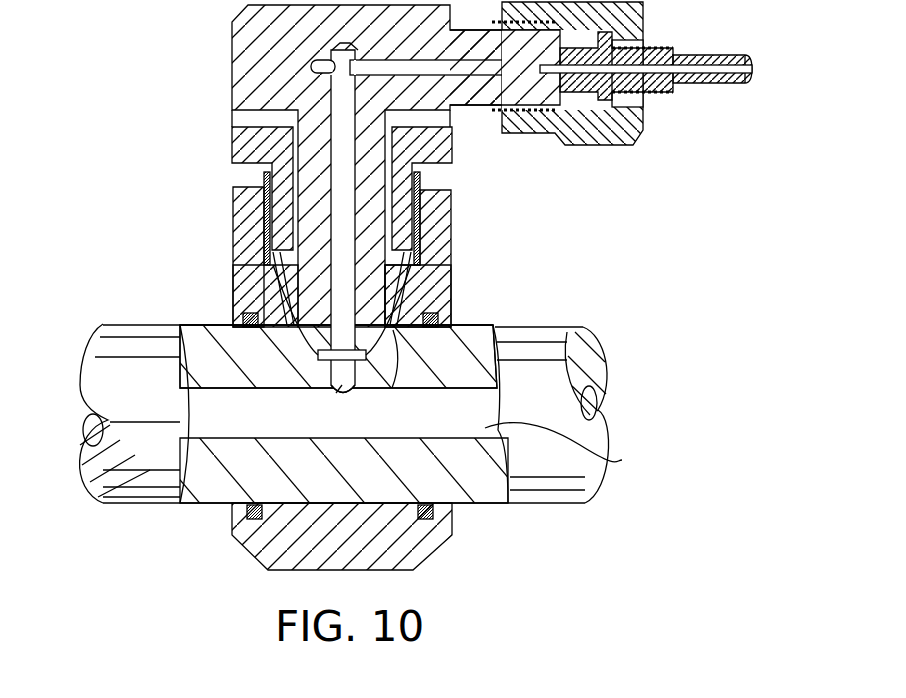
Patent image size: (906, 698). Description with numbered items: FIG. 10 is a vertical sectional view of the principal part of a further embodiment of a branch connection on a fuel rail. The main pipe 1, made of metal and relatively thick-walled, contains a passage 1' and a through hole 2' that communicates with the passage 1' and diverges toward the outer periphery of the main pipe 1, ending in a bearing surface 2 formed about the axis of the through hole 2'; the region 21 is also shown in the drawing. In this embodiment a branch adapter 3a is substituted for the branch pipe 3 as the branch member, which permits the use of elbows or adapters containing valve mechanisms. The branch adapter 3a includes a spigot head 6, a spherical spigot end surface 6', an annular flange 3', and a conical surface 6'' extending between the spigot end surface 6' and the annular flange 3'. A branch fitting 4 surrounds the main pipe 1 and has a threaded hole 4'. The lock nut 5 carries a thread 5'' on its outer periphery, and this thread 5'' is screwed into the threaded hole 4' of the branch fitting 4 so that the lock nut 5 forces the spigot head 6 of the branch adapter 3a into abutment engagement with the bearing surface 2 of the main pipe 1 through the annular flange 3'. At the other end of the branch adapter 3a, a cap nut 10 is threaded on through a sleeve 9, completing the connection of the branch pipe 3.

The main pipe 1 is at (274, 404).
The passage 1' is at (482, 414).
The bearing surface 2 is at (342, 351).
The through hole 2' is at (322, 411).
The flow passage 21 is at (440, 360).
The branch pipe 3 is at (712, 41).
The annular flange 3' is at (227, 257).
The branch adapter 3a is at (407, 207).
The branch fitting 4 is at (214, 296).
The threaded hole 4' is at (457, 252).
The lock nut 5 is at (435, 180).
The thread 5'' is at (225, 180).
The spigot head 6 is at (444, 296).
The spherical spigot end surface 6' is at (443, 289).
The conical surface 6'' is at (237, 288).
The sleeve 9 is at (657, 90).
The cap nut 10 is at (612, 133).